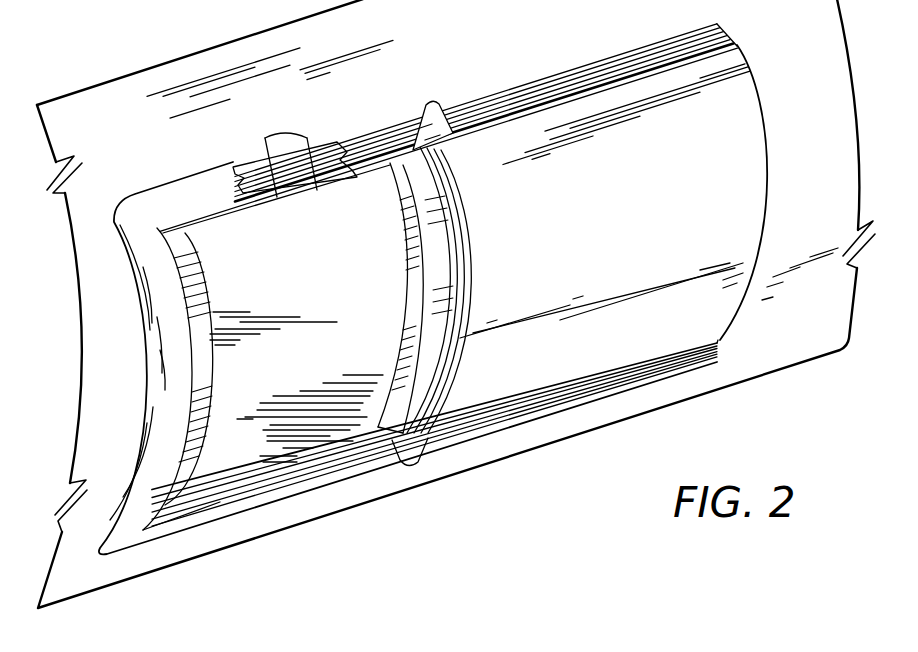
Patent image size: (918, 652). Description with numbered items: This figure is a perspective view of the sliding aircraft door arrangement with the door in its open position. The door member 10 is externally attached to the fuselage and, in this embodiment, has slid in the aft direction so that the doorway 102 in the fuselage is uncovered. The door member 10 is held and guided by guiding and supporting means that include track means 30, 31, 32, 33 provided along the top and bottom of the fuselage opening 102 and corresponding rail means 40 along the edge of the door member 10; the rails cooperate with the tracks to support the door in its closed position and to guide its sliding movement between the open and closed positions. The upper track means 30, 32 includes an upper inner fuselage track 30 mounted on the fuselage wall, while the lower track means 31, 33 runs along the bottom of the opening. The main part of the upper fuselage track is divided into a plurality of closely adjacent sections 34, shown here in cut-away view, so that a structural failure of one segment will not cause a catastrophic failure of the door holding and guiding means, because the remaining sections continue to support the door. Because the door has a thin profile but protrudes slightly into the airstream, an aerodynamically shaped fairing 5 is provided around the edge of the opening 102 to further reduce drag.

The door member 10 is at (562, 118).
The rail means 40 is at (723, 36).
The closely adjacent sections 34 is at (254, 167).
The upper inner fuselage track 30 is at (428, 247).
The upper track means 32 is at (413, 148).
The lower track means 31 is at (420, 485).
The lower track means 33 is at (385, 432).
The doorway 102 is at (300, 447).
The fairing 5 is at (620, 326).